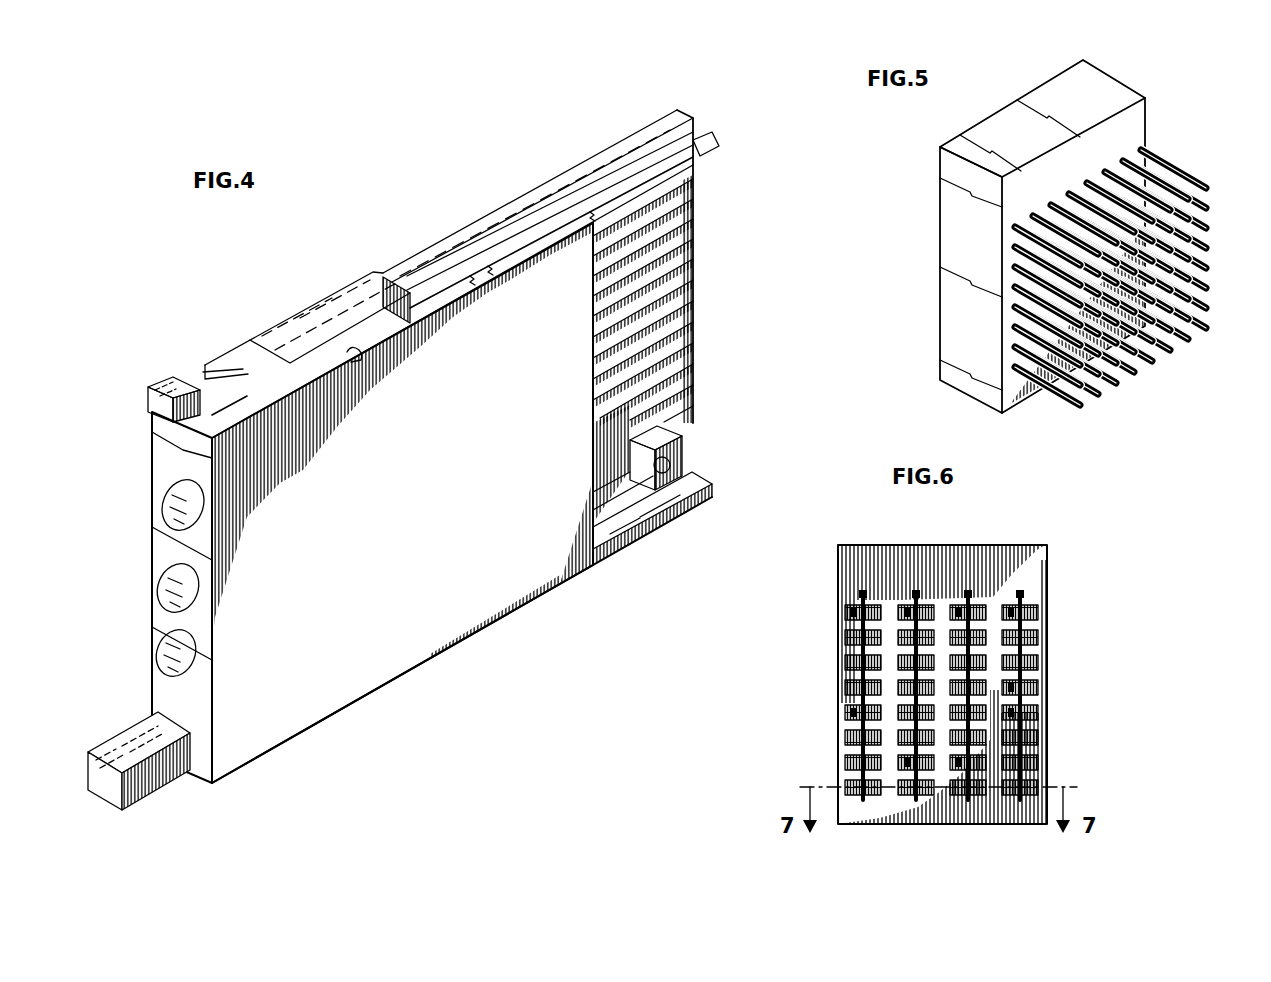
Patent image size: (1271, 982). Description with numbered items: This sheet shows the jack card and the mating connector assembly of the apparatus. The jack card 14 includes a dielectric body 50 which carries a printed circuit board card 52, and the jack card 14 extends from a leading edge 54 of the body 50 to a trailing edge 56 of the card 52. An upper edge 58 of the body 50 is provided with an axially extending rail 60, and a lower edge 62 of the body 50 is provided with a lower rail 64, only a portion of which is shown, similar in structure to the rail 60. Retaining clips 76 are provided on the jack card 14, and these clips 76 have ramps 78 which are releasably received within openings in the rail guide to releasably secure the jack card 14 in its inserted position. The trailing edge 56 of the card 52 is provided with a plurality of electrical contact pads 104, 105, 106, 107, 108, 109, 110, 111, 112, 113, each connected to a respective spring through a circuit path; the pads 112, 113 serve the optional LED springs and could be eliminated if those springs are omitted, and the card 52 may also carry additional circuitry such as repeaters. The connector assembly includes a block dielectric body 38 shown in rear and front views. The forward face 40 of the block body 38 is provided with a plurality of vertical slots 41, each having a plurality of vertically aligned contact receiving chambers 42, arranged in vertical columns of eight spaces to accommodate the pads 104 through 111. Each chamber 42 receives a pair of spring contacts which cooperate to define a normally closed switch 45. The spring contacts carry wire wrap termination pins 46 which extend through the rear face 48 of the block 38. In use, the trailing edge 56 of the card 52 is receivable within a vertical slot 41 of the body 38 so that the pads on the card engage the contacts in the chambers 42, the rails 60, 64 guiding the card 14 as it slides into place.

In FIG. 4, the jack card 14 is at (402, 503).
In FIG. 4, the dielectric body 50 is at (280, 730).
In FIG. 4, the printed circuit board card 52 is at (645, 518).
In FIG. 4, the leading edge 54 is at (152, 597).
In FIG. 4, the trailing edge 56 is at (676, 299).
In FIG. 4, the upper edge 58 is at (374, 366).
In FIG. 4, the rail 60 is at (452, 274).
In FIG. 4, the lower edge 62 is at (356, 706).
In FIG. 4, the lower rail 64 is at (160, 775).
In FIG. 4, the retaining clips 76 is at (160, 375).
In FIG. 4, the ramps 78 is at (306, 325).
In FIG. 4, the electrical contact pad 104 is at (704, 388).
In FIG. 4, the electrical contact pad 105 is at (705, 363).
In FIG. 4, the electrical contact pad 106 is at (705, 346).
In FIG. 4, the electrical contact pad 107 is at (705, 326).
In FIG. 4, the electrical contact pad 108 is at (704, 307).
In FIG. 4, the electrical contact pad 109 is at (704, 292).
In FIG. 4, the electrical contact pad 110 is at (704, 270).
In FIG. 4, the electrical contact pad 111 is at (704, 246).
In FIG. 4, the electrical contact pad 112 is at (704, 194).
In FIG. 4, the electrical contact pad 113 is at (704, 170).
In FIG. 5, the block dielectric body 38 is at (1008, 314).
In FIG. 6, the block dielectric body 38 is at (798, 583).
In FIG. 5, the wire wrap termination pins 46 is at (1036, 218).
In FIG. 5, the rear face 48 is at (1073, 236).
In FIG. 6, the forward face 40 is at (963, 669).
In FIG. 6, the vertical slots 41 is at (862, 592).
In FIG. 6, the contact receiving chambers 42 is at (947, 694).
In FIG. 6, the normally closed switch 45 is at (806, 742).